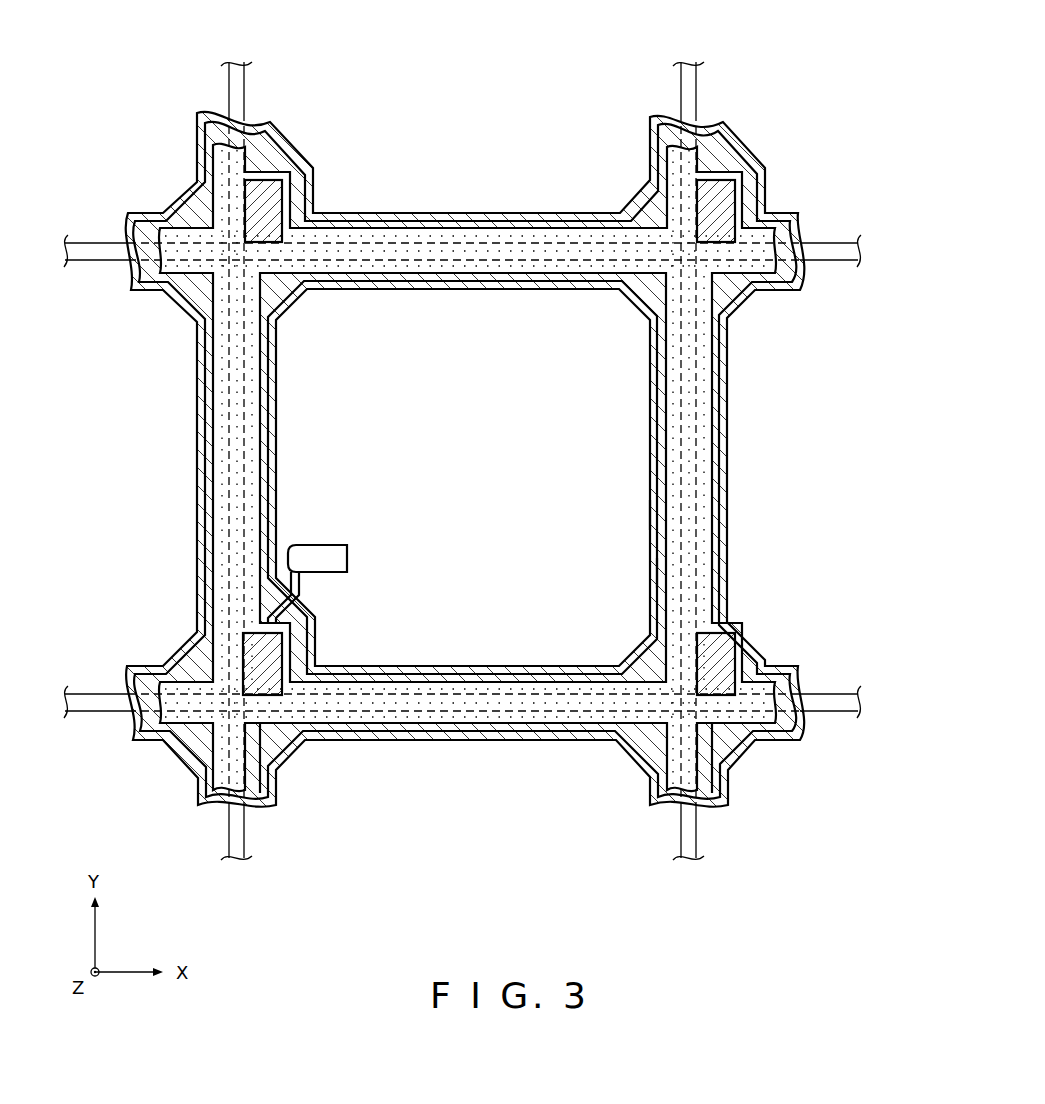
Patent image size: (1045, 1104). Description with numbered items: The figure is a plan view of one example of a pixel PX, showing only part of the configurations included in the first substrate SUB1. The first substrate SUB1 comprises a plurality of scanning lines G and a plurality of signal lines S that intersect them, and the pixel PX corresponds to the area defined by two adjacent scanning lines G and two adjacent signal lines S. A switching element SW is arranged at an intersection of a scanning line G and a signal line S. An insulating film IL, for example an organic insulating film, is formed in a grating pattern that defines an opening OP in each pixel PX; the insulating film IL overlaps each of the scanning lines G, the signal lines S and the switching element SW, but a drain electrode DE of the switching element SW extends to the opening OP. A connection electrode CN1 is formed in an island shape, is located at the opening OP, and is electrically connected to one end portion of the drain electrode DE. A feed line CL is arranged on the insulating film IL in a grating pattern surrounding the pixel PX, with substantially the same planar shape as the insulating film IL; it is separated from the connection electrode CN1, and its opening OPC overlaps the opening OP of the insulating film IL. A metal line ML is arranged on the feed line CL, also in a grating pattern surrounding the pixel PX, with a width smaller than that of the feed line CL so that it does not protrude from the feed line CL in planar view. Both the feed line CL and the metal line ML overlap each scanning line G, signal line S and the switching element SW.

The signal line S is at (239, 62).
The scanning line G is at (862, 251).
The first substrate SUB1 is at (797, 109).
The pixel PX is at (517, 352).
The feed line CL is at (752, 302).
The metal line ML is at (748, 336).
The insulating film IL is at (736, 393).
The opening OP is at (645, 515).
The opening of the feed line OPC is at (652, 573).
The connection electrode CN1 is at (348, 560).
The drain electrode DE is at (303, 588).
The switching element SW is at (262, 648).